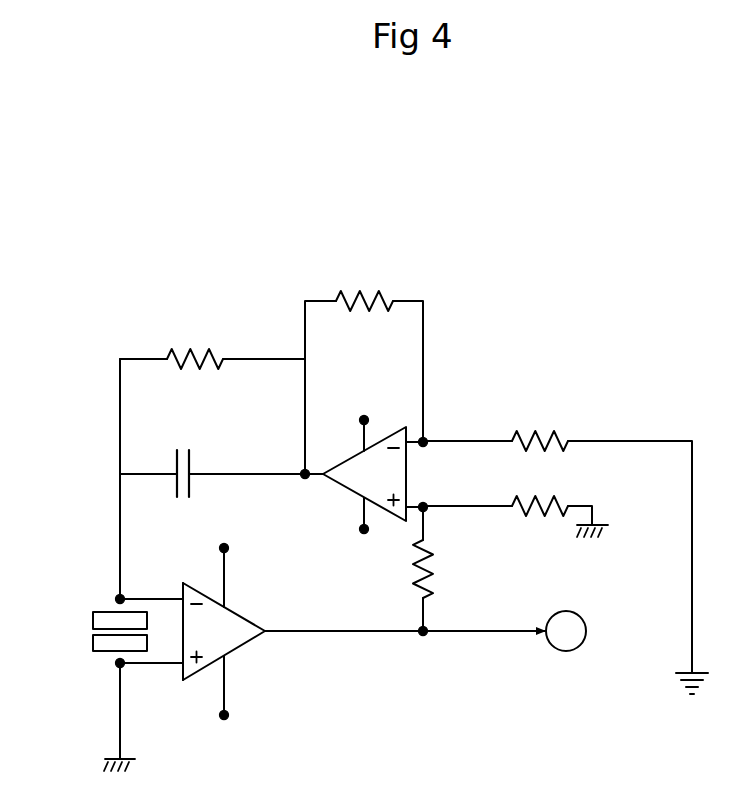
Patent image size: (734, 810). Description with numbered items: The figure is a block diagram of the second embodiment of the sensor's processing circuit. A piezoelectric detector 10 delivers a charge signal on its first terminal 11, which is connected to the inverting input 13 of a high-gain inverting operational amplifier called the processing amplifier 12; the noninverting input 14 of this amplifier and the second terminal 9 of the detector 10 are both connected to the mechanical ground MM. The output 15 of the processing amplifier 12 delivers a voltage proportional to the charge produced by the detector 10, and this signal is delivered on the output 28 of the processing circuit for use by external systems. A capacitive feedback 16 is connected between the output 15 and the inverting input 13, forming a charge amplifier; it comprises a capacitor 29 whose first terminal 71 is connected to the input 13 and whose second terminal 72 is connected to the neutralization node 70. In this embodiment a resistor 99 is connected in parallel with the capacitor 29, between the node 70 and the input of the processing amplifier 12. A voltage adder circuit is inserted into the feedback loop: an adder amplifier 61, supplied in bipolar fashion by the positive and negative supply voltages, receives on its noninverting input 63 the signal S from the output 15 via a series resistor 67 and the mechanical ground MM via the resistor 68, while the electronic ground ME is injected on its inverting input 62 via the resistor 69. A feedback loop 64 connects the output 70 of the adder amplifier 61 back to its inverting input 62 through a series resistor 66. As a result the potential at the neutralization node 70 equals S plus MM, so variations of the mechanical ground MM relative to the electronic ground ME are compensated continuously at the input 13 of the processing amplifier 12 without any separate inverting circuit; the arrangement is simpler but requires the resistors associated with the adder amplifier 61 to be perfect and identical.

The second terminal 9 is at (118, 708).
The piezoelectric detector 10 is at (82, 637).
The first terminal 11 is at (114, 606).
The processing amplifier 12 is at (220, 636).
The inverting input 13 is at (183, 596).
The noninverting input 14 is at (182, 676).
The output 15 is at (271, 627).
The capacitive feedback 16 is at (174, 446).
The output 28 is at (578, 636).
The capacitor 29 is at (215, 473).
The adder amplifier 61 is at (350, 478).
The inverting input 62 is at (425, 444).
The noninverting input 63 is at (425, 505).
The feedback loop 64 is at (424, 400).
The series resistor 66 is at (346, 298).
The series resistor 67 is at (430, 566).
The series resistor 68 is at (534, 506).
The series resistor 69 is at (534, 441).
The neutralization node 70 is at (304, 470).
The first terminal 71 is at (176, 477).
The second terminal 72 is at (190, 474).
The resistor 99 is at (185, 354).